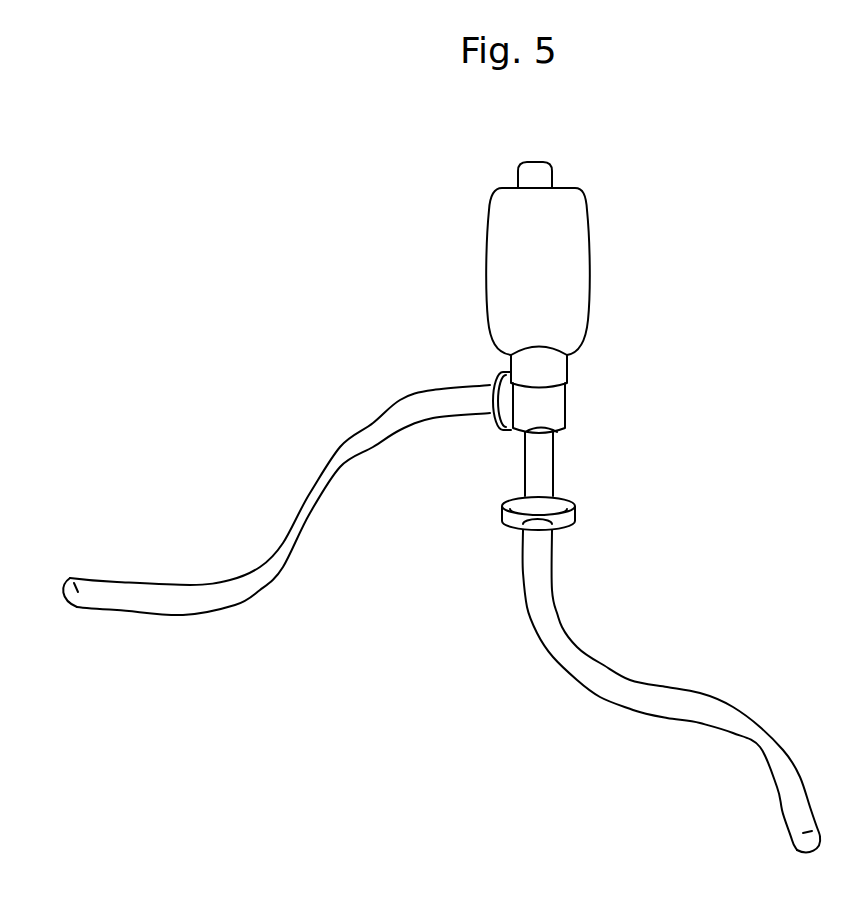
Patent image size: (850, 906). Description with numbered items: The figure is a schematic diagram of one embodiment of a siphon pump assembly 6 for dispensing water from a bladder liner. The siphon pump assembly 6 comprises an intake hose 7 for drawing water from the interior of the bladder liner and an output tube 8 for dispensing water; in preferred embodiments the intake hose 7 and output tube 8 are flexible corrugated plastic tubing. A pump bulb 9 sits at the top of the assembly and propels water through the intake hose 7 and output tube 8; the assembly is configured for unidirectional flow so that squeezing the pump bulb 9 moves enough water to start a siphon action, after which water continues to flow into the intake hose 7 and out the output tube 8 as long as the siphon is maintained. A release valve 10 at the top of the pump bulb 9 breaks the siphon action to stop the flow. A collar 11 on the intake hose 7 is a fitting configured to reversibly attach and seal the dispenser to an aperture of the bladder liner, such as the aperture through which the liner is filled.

The siphon pump assembly 6 is at (572, 367).
The intake hose 7 is at (565, 625).
The output tube 8 is at (311, 488).
The pump bulb 9 is at (488, 280).
The release valve 10 is at (556, 180).
The collar 11 is at (580, 513).